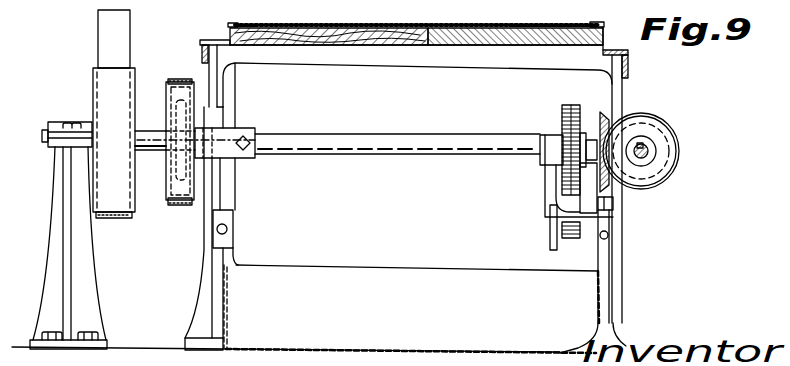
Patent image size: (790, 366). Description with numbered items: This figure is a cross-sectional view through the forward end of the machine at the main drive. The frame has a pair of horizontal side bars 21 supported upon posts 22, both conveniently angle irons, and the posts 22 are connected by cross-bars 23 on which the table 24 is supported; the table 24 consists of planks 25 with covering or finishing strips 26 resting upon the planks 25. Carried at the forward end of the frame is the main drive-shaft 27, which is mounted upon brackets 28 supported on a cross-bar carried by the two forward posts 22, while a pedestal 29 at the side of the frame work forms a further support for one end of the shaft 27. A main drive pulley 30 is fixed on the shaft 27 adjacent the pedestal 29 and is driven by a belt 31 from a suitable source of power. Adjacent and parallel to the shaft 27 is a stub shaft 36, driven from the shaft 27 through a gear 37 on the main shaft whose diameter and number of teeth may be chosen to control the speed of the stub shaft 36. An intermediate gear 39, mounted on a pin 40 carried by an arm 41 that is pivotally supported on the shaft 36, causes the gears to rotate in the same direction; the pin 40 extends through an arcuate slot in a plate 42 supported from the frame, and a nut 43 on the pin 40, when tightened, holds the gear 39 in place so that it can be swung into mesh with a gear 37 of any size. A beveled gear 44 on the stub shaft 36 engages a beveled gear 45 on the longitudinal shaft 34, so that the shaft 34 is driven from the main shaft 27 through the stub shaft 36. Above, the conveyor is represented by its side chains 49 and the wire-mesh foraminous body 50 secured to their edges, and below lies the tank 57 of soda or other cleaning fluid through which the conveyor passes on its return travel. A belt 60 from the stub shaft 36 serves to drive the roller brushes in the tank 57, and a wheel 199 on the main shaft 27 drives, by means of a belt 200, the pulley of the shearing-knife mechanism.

The horizontal side bars 21 is at (203, 45).
The posts 22 is at (210, 268).
The cross-bars 23 is at (360, 68).
The table 24 is at (438, 41).
The planks 25 is at (570, 38).
The covering or finishing strips 26 is at (549, 177).
The main drive-shaft 27 is at (376, 137).
The brackets 28 is at (232, 189).
The pedestal 29 is at (55, 237).
The main drive pulley 30 is at (104, 95).
The belt 31 is at (108, 38).
The shaft 34 is at (658, 138).
The stub shaft 36 is at (230, 127).
The gear 37 is at (560, 110).
The intermediate gear 39 is at (571, 240).
The pin 40 is at (672, 168).
The arm 41 is at (549, 229).
The plate 42 is at (600, 217).
The nut 43 is at (614, 208).
The beveled gear 44 is at (607, 113).
The beveled gear 45 is at (680, 151).
The side chains 49 is at (234, 24).
The foraminous body 50 is at (428, 25).
The tank 57 is at (404, 266).
The belt 60 is at (178, 128).
The wheel 199 is at (178, 196).
The belt 200 is at (188, 79).